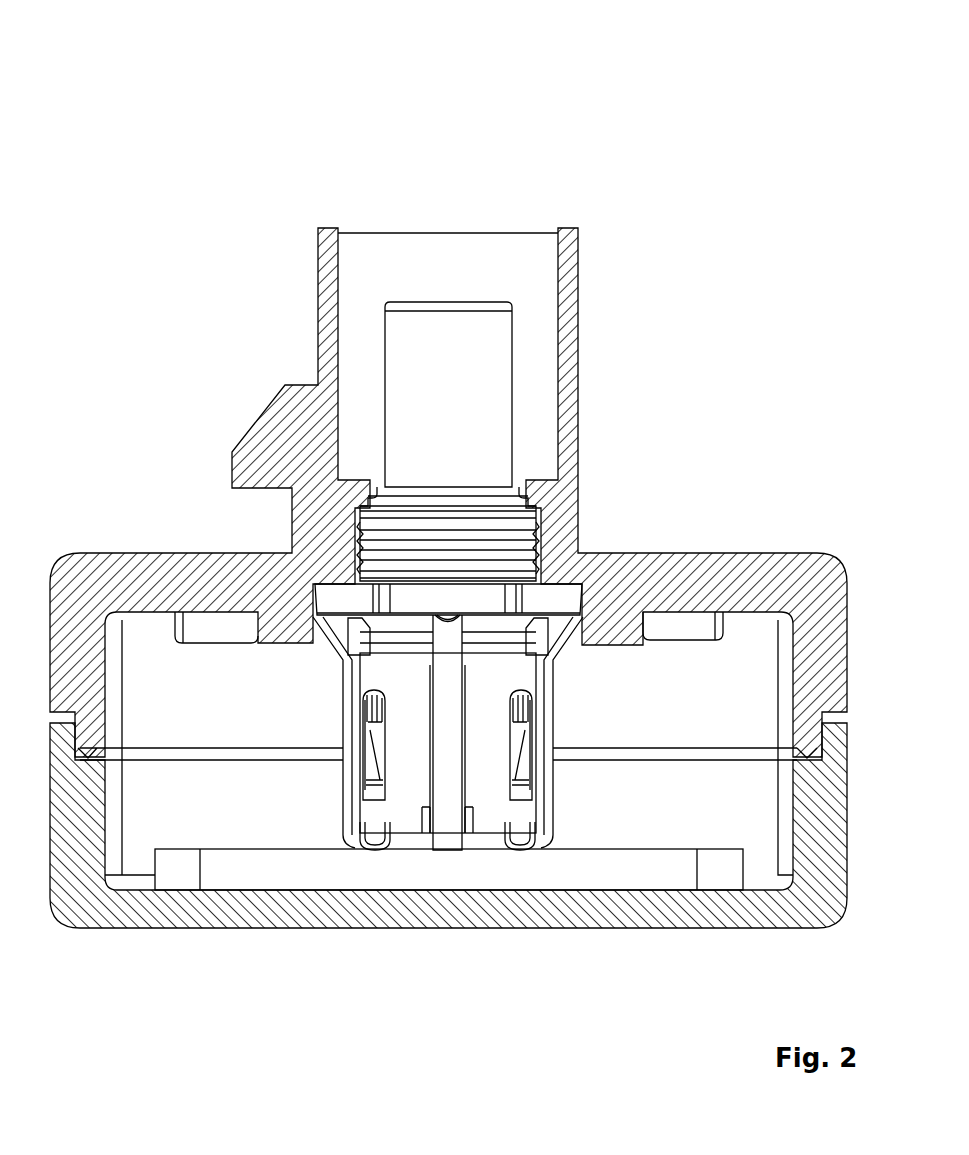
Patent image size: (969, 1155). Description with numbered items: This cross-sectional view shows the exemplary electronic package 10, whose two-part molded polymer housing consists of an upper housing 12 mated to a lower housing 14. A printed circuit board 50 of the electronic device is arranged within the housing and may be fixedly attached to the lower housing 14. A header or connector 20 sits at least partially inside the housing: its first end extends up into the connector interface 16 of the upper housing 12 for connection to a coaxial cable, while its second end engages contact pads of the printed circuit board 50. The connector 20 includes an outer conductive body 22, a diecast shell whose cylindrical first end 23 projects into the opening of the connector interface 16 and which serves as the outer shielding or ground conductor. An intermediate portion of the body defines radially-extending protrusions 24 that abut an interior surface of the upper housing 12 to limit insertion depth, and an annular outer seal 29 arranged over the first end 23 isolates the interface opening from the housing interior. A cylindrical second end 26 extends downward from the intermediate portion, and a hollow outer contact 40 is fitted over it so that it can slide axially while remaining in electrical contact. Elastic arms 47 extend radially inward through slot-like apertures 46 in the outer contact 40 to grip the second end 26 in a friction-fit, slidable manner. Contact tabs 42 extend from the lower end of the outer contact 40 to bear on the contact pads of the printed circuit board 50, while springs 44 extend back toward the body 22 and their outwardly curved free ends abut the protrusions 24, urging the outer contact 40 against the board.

The package 10 is at (714, 80).
The upper housing 12 is at (760, 572).
The lower housing 14 is at (826, 803).
The connector interface 16 is at (292, 433).
The connector 20 is at (528, 389).
The outer conductive body 22 is at (471, 325).
The first end 23 is at (442, 335).
The radially-extending protrusion 24 is at (570, 597).
The second end 26 is at (382, 648).
The outer seal 29 is at (523, 559).
The outer contact 40 is at (382, 678).
The contact tabs 42 is at (352, 840).
The springs 44 is at (352, 777).
The apertures 46 is at (535, 700).
The elastic arms 47 is at (535, 723).
The printed circuit board 50 is at (633, 873).